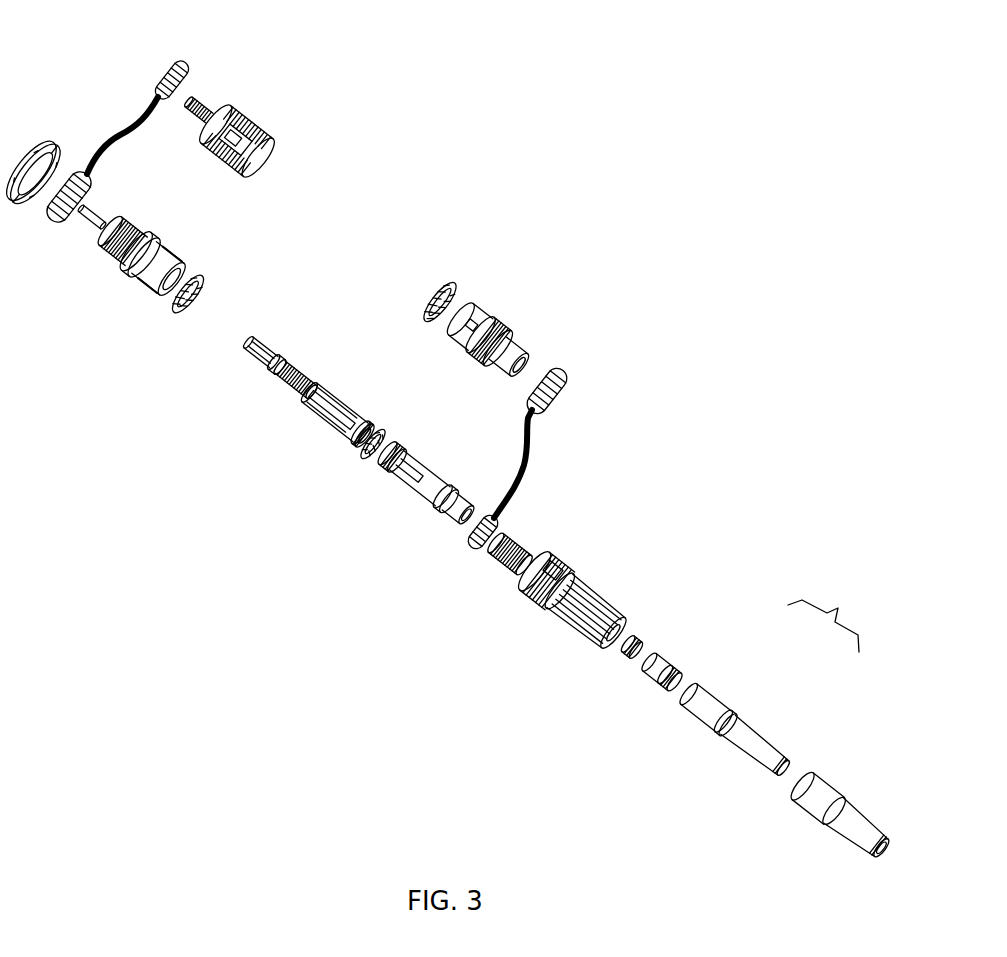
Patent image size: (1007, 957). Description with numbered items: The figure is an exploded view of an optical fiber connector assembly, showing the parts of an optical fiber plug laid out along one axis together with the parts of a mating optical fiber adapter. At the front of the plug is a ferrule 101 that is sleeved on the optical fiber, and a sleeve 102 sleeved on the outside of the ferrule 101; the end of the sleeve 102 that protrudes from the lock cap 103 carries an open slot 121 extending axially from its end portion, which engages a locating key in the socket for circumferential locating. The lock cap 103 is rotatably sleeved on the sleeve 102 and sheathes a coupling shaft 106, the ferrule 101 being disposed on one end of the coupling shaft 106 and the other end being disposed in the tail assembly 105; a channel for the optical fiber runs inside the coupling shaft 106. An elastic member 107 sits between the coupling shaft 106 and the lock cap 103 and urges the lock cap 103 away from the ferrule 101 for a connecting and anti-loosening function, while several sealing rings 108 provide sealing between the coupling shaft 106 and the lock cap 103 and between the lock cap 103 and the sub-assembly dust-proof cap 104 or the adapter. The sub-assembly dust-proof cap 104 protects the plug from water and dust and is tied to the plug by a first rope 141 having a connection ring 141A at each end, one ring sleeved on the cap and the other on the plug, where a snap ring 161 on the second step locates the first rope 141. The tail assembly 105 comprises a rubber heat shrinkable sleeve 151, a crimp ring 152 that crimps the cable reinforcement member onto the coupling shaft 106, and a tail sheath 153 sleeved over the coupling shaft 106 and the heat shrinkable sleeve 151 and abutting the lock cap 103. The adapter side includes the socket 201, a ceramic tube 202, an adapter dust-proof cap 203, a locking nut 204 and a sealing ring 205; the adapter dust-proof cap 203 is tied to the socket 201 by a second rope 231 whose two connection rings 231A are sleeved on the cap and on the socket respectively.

The ferrule 101 is at (257, 363).
The sleeve 102 is at (322, 420).
The lock cap 103 is at (580, 630).
The sub-assembly dust-proof cap 104 is at (507, 325).
The tail assembly 105 is at (831, 615).
The coupling shaft 106 is at (427, 482).
The elastic member 107 is at (508, 563).
The sealing ring 108 is at (362, 452).
The open slot 121 is at (327, 385).
The first rope 141 is at (533, 458).
The connection ring 141A is at (566, 381).
The rubber heat shrinkable sleeve 151 is at (738, 737).
The crimp ring 152 is at (667, 660).
The tail sheath 153 is at (827, 802).
The snap ring 161 is at (633, 632).
The socket 201 is at (168, 245).
The ceramic tube 202 is at (97, 210).
The adapter dust-proof cap 203 is at (268, 130).
The locking nut 204 is at (32, 147).
The sealing ring 205 is at (202, 277).
The second rope 231 is at (126, 130).
The connection ring 231A is at (172, 62).